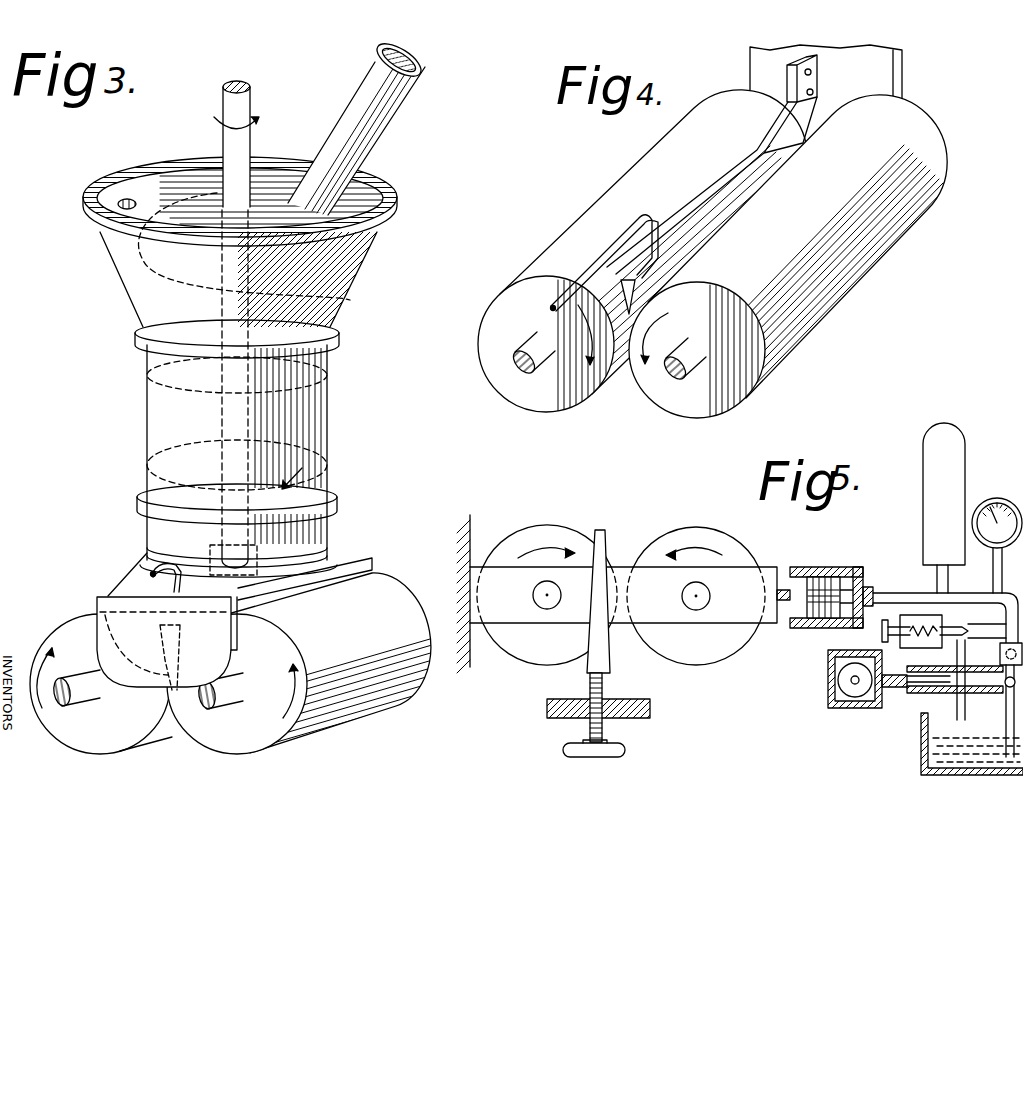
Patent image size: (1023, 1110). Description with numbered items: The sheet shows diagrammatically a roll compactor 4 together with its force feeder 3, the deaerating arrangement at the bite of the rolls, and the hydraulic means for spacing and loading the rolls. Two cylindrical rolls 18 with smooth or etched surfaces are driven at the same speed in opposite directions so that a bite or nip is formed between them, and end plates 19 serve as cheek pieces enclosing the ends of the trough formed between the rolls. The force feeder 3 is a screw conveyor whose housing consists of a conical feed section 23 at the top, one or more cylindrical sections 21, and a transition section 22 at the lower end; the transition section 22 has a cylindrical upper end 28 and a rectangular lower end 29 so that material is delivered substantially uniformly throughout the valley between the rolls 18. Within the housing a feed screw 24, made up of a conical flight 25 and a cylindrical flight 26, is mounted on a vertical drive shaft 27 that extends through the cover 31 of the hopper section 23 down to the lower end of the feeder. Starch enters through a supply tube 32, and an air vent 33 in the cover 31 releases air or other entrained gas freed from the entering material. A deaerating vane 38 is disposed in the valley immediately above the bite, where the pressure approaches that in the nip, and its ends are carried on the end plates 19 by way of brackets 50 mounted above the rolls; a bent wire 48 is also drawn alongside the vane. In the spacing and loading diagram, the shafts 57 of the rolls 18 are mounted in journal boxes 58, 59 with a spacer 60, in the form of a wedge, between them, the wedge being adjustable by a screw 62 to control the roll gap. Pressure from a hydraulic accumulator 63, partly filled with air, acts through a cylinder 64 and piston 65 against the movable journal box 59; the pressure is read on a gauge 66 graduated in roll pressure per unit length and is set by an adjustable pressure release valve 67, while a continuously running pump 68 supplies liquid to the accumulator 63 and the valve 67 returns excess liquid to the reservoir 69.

In FIG. 3, the force feeder 3 is at (352, 366).
In FIG. 3, the roll compactor 4 is at (363, 722).
In FIG. 3, the cylindrical rolls 18 is at (63, 627).
In FIG. 4, the cylindrical rolls 18 is at (498, 305).
In FIG. 5, the cylindrical rolls 18 is at (543, 528).
In FIG. 3, the end plates 19 is at (139, 618).
In FIG. 4, the end plates 19 is at (866, 76).
In FIG. 3, the cylindrical sections 21 is at (146, 414).
In FIG. 3, the transition section 22 is at (132, 570).
In FIG. 3, the conical feed section 23 is at (120, 262).
In FIG. 3, the feed screw 24 is at (325, 466).
In FIG. 3, the conical flight 25 is at (335, 300).
In FIG. 3, the cylindrical flight 26 is at (322, 408).
In FIG. 3, the vertical drive shaft 27 is at (229, 137).
In FIG. 3, the cylindrical upper end 28 is at (322, 540).
In FIG. 3, the rectangular lower end 29 is at (374, 566).
In FIG. 3, the cover 31 is at (152, 183).
In FIG. 3, the supply tube 32 is at (378, 128).
In FIG. 3, the air vent 33 is at (118, 202).
In FIG. 3, the deaerating vane 38 is at (165, 735).
In FIG. 4, the deaerating vane 38 is at (738, 188).
In FIG. 3, the scraper wire 48 is at (150, 570).
In FIG. 4, the scraper wire 48 is at (607, 253).
In FIG. 4, the brackets 50 is at (786, 75).
In FIG. 3, the roll shafts 57 is at (88, 692).
In FIG. 4, the roll shafts 57 is at (558, 372).
In FIG. 5, the roll shafts 57 is at (548, 607).
In FIG. 5, the journal box 58 is at (508, 613).
In FIG. 5, the movable journal box 59 is at (730, 615).
In FIG. 5, the spacer 60 is at (599, 663).
In FIG. 5, the screw 62 is at (604, 731).
In FIG. 5, the hydraulic accumulator 63 is at (932, 453).
In FIG. 5, the cylinder 64 is at (848, 568).
In FIG. 5, the piston 65 is at (822, 580).
In FIG. 5, the gauge 66 is at (1010, 492).
In FIG. 5, the adjustable pressure release valve 67 is at (913, 622).
In FIG. 5, the pump 68 is at (828, 686).
In FIG. 5, the reservoir 69 is at (920, 749).